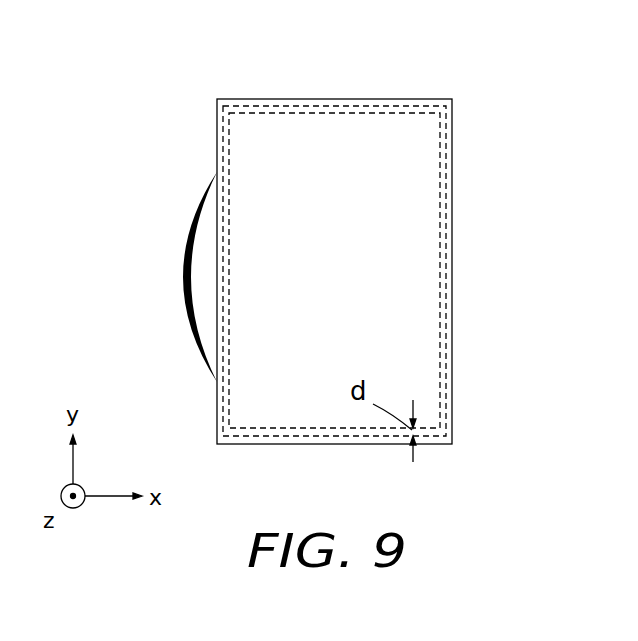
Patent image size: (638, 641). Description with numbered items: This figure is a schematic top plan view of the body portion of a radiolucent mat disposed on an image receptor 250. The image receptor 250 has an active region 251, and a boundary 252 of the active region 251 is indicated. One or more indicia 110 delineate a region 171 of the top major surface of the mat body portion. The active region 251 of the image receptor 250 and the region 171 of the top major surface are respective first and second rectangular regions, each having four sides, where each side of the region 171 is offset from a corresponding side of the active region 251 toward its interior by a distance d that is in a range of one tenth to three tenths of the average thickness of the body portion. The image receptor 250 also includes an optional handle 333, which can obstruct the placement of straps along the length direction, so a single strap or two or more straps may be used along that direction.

The indicia 110 is at (365, 99).
The image receptor 250 is at (288, 221).
The active region 251 is at (249, 108).
The boundary 252 is at (268, 112).
The region of the top major surface 171 is at (378, 228).
The handle 333 is at (196, 230).